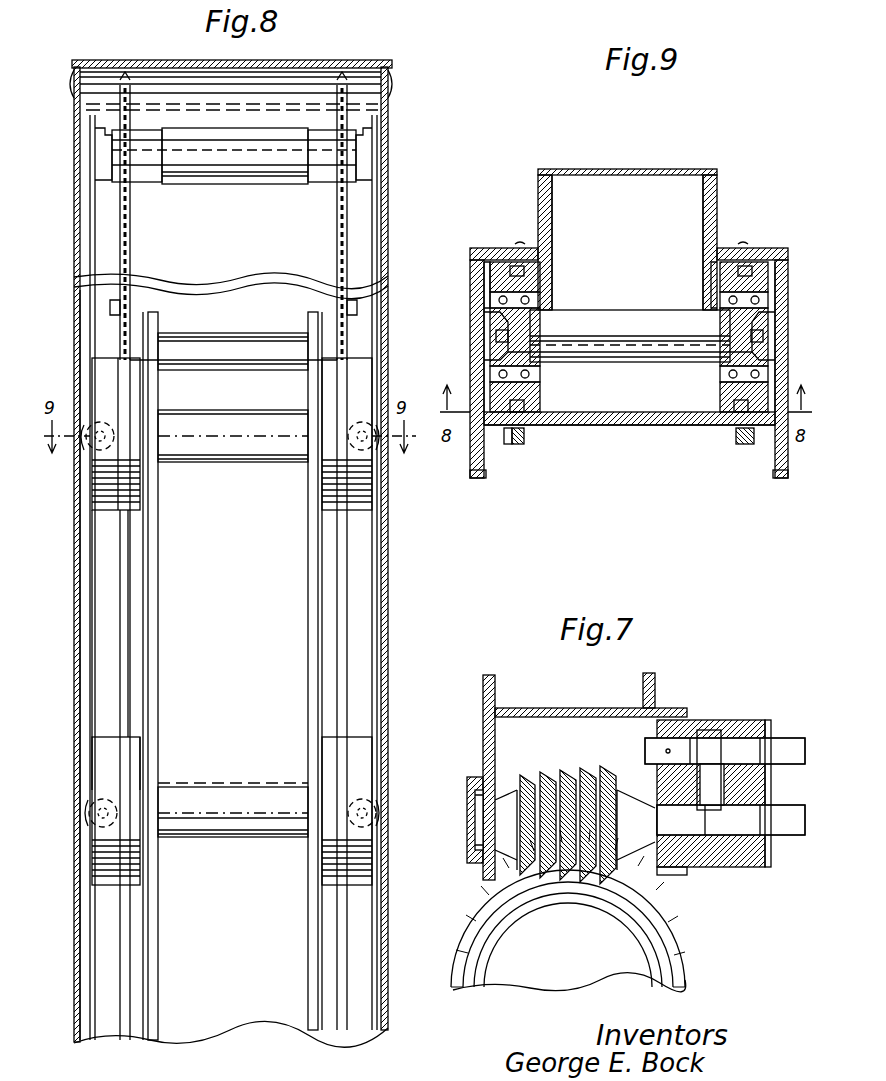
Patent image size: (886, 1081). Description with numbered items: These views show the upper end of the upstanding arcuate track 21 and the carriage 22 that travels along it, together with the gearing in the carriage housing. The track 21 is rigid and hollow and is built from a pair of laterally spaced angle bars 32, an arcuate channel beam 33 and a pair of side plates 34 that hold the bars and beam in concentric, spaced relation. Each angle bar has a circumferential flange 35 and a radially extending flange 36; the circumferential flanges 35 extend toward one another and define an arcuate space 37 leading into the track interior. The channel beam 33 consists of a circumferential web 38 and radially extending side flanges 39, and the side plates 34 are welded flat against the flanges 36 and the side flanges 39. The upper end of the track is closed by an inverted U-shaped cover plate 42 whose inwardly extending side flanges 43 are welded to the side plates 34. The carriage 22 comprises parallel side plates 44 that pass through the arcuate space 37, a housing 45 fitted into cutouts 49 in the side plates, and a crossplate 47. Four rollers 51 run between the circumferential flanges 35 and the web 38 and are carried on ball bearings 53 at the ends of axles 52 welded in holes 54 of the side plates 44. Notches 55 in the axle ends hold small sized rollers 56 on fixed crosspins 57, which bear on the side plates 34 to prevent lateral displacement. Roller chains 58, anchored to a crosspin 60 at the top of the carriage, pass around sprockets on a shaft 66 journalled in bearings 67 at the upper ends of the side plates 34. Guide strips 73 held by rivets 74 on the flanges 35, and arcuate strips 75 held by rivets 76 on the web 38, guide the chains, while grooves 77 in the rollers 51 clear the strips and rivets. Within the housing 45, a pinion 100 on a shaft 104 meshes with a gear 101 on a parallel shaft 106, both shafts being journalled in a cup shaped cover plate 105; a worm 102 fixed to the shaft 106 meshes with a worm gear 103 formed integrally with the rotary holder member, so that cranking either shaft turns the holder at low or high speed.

In FIG. 8, the arcuate track 21 is at (66, 247).
In FIG. 9, the carriage 22 is at (582, 158).
In FIG. 9, the angle bars 32 is at (492, 240).
In FIG. 8, the arcuate channel beam 33 is at (99, 598).
In FIG. 9, the arcuate channel beam 33 is at (634, 436).
In FIG. 8, the side plates 34 is at (388, 230).
In FIG. 9, the side plates 34 is at (484, 373).
In FIG. 9, the circumferential flanges 35 is at (540, 258).
In FIG. 9, the radially extending flanges 36 is at (478, 280).
In FIG. 9, the arcuate space 37 is at (712, 255).
In FIG. 8, the circumferential web 38 is at (233, 624).
In FIG. 9, the circumferential web 38 is at (588, 428).
In FIG. 8, the side flanges 39 is at (86, 664).
In FIG. 9, the side flanges 39 is at (486, 474).
In FIG. 8, the cover plate 42 is at (350, 62).
In FIG. 8, the side flanges 43 is at (72, 70).
In FIG. 8, the side plates 44 is at (160, 533).
In FIG. 9, the side plates 44 is at (554, 204).
In FIG. 7, the side plates 44 is at (491, 676).
In FIG. 7, the housing 45 is at (483, 744).
In FIG. 9, the crossplate 47 is at (634, 168).
In FIG. 7, the cutouts 49 is at (500, 708).
In FIG. 8, the rollers 51 is at (100, 512).
In FIG. 9, the rollers 51 is at (545, 285).
In FIG. 8, the axles 52 is at (260, 458).
In FIG. 9, the axles 52 is at (628, 360).
In FIG. 9, the ball bearings 53 is at (540, 384).
In FIG. 9, the holes 54 is at (560, 352).
In FIG. 9, the notches 55 is at (484, 348).
In FIG. 8, the small sized rollers 56 is at (98, 792).
In FIG. 9, the small sized rollers 56 is at (484, 326).
In FIG. 9, the crosspins 57 is at (488, 310).
In FIG. 8, the roller chains 58 is at (336, 247).
In FIG. 9, the roller chains 58 is at (738, 445).
In FIG. 8, the crosspin 60 is at (268, 362).
In FIG. 8, the shaft 66 is at (198, 152).
In FIG. 8, the bearings 67 is at (96, 133).
In FIG. 9, the guide strips 73 is at (545, 276).
In FIG. 9, the rivets 74 is at (520, 247).
In FIG. 8, the arcuate strips 75 is at (122, 630).
In FIG. 9, the arcuate strips 75 is at (524, 444).
In FIG. 9, the rivets 76 is at (520, 415).
In FIG. 8, the grooves 77 is at (372, 490).
In FIG. 9, the grooves 77 is at (508, 449).
In FIG. 7, the pinion 100 is at (664, 735).
In FIG. 7, the gear 101 is at (668, 876).
In FIG. 7, the worm 102 is at (535, 775).
In FIG. 7, the worm gear 103 is at (470, 914).
In FIG. 7, the shaft 104 is at (762, 748).
In FIG. 7, the cover plate 105 is at (768, 718).
In FIG. 7, the shaft 106 is at (762, 830).